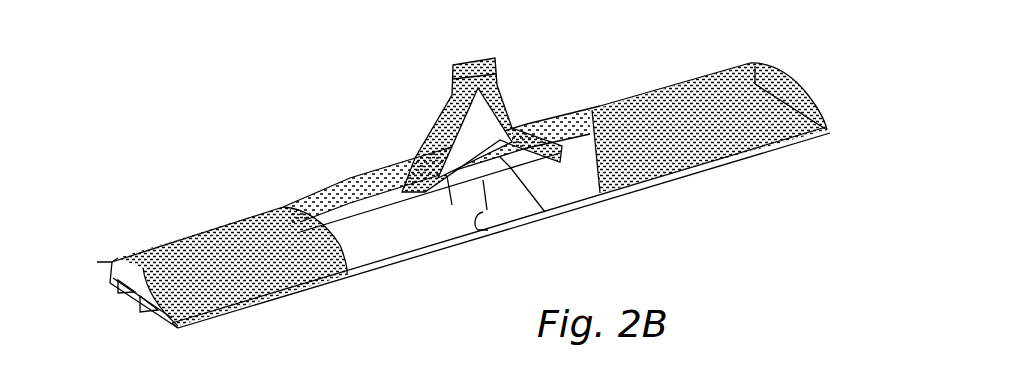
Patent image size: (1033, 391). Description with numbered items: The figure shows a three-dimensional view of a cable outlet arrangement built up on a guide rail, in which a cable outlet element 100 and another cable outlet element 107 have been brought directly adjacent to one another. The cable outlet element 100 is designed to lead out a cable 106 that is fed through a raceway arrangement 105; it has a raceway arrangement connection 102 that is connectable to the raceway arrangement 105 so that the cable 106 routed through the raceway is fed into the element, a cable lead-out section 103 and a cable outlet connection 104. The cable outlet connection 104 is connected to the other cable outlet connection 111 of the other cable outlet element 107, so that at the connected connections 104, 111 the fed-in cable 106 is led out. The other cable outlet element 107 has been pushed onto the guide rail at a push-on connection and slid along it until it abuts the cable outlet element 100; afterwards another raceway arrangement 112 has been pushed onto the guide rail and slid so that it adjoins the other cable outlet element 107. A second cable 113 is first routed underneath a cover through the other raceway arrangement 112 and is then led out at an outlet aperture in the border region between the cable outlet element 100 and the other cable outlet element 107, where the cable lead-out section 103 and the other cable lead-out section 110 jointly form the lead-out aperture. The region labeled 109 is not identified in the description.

The cable outlet element 100 is at (630, 183).
The raceway arrangement connection 102 is at (620, 100).
The cable lead-out section 103 is at (550, 213).
The cable outlet connection 104 is at (538, 232).
The raceway arrangement 105 is at (700, 78).
The cable 106 is at (500, 88).
The other cable outlet element 107 is at (413, 238).
The end face 109 is at (312, 286).
The other cable lead-out section 110 is at (450, 185).
The other cable outlet connection 111 is at (490, 233).
The other raceway arrangement 112 is at (218, 233).
The second cable 113 is at (450, 97).